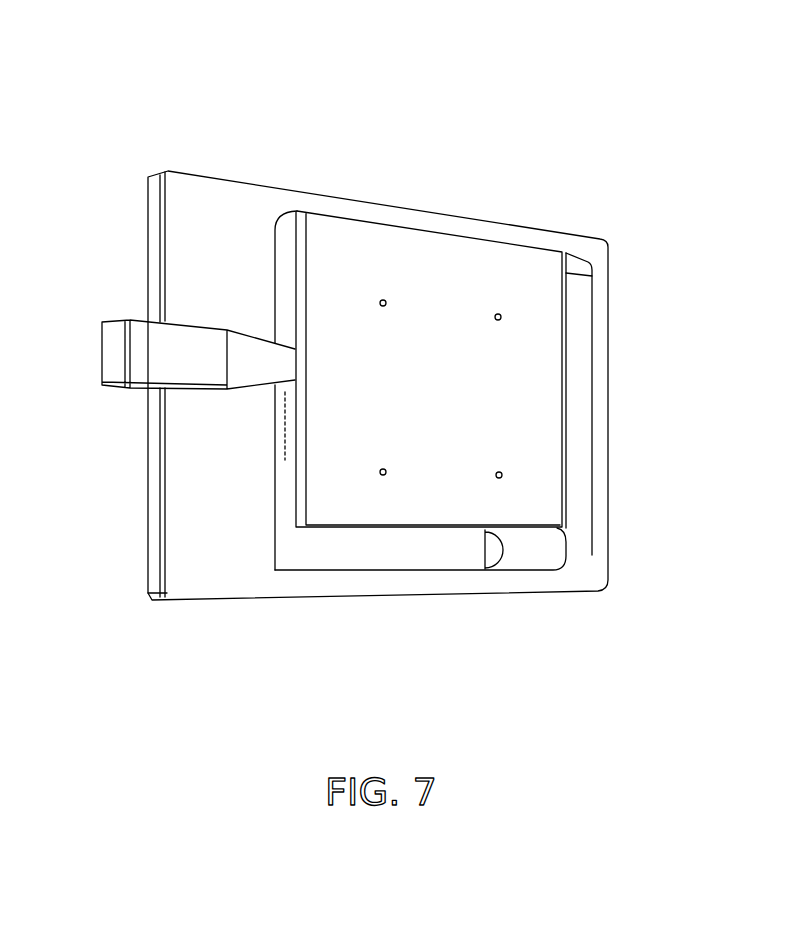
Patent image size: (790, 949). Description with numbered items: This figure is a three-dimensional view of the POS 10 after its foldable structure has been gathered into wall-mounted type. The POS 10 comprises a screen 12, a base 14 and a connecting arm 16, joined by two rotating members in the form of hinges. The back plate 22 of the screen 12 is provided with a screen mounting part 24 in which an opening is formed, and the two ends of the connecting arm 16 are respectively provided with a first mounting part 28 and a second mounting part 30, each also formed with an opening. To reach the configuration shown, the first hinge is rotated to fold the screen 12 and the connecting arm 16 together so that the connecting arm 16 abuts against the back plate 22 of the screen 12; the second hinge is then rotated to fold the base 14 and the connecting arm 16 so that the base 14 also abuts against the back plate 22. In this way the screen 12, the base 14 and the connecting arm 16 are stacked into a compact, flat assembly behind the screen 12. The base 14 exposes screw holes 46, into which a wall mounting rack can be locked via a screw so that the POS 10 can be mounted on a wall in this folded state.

The POS 10 is at (388, 137).
The screen 12 is at (157, 233).
The base 14 is at (470, 257).
The connecting arm 16 is at (577, 398).
The back plate 22 is at (187, 477).
The screen mounting part 24 is at (527, 555).
The first mounting part 28 is at (580, 562).
The second mounting part 30 is at (576, 258).
The screw hole 46 is at (385, 475).